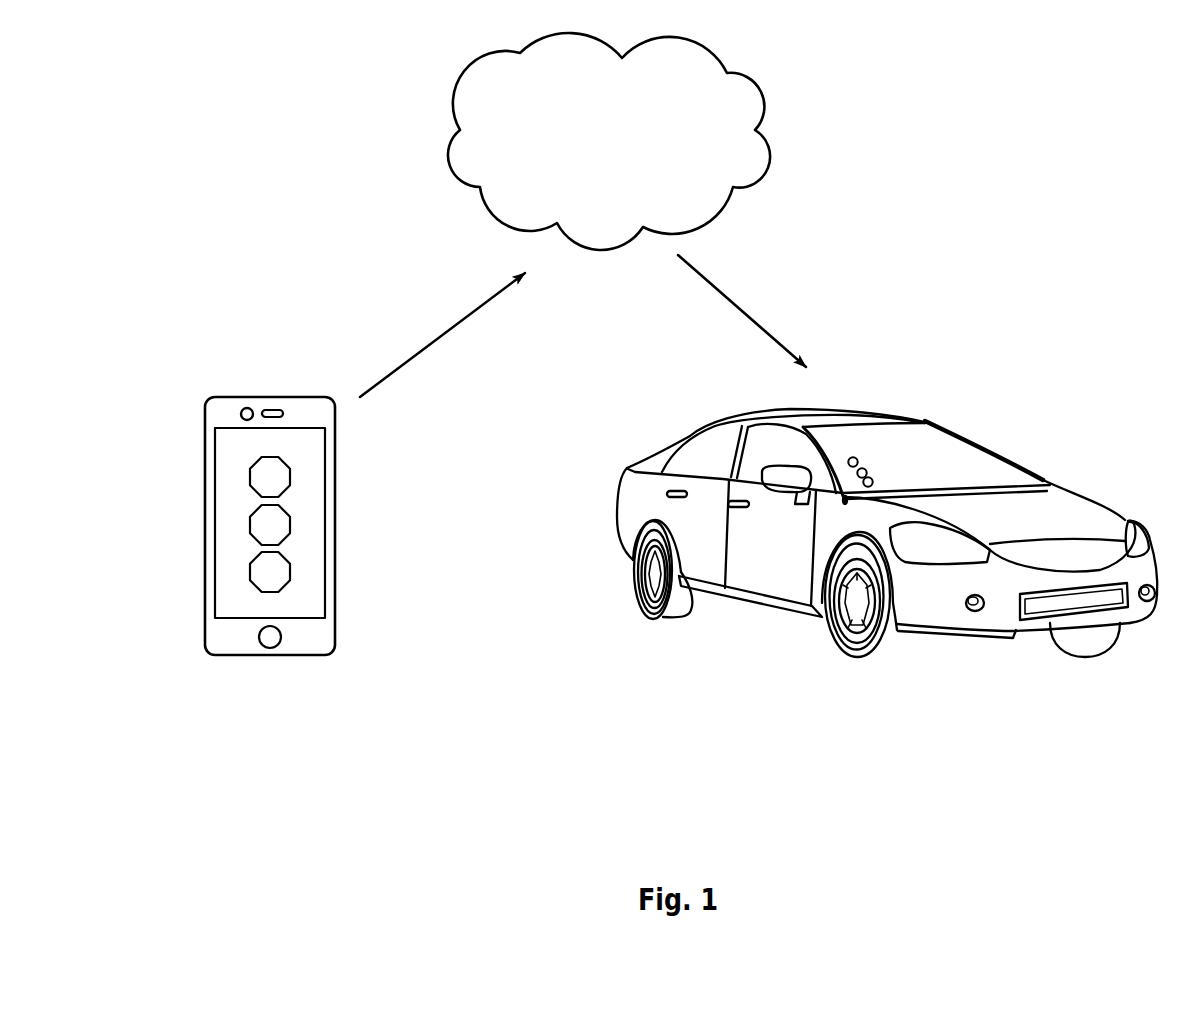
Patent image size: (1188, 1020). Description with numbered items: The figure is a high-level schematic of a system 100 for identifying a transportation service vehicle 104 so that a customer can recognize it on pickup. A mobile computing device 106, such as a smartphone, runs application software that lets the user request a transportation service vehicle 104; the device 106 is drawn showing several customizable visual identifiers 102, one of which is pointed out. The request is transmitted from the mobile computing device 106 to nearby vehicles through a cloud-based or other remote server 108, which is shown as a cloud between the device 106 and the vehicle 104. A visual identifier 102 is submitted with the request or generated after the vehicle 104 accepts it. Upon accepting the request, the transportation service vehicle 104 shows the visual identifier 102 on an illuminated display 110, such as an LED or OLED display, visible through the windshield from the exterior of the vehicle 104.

The system 100 is at (188, 80).
The visual identifier 102 is at (234, 469).
The transportation service vehicle 104 is at (1045, 525).
The mobile computing device 106 is at (221, 399).
The cloud-based or other remote server 108 is at (625, 167).
The illuminated display 110 is at (886, 469).